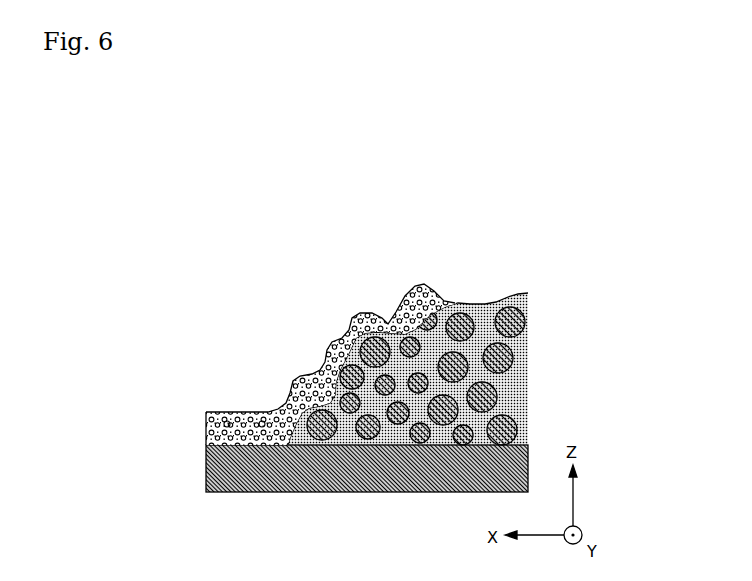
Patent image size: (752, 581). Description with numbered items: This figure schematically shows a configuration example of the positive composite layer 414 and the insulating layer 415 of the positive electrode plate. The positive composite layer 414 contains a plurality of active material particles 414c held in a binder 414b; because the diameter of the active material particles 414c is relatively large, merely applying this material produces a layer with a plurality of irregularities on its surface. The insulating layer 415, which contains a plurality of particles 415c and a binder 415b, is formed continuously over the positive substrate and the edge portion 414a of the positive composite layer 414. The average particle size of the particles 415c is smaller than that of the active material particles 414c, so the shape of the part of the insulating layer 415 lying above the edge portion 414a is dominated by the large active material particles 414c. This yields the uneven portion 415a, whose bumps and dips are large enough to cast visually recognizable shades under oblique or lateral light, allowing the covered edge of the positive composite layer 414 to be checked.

The positive composite layer 414 is at (455, 285).
The edge portion of the positive composite layer 414a is at (385, 318).
The binder of the positive composite layer 414b is at (477, 348).
The active material particles 414c is at (432, 315).
The insulating layer 415 is at (275, 284).
The uneven portion 415a is at (326, 303).
The binder of the insulating layer 415b is at (287, 405).
The particles of the insulating layer 415c is at (261, 421).